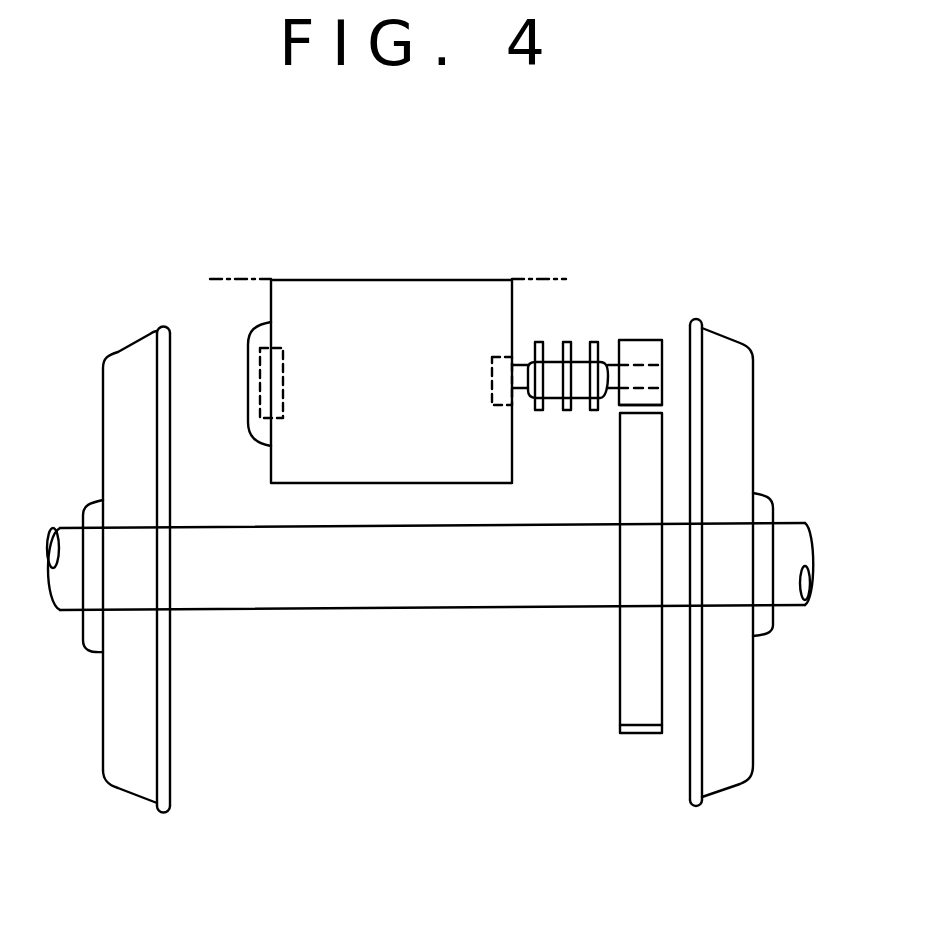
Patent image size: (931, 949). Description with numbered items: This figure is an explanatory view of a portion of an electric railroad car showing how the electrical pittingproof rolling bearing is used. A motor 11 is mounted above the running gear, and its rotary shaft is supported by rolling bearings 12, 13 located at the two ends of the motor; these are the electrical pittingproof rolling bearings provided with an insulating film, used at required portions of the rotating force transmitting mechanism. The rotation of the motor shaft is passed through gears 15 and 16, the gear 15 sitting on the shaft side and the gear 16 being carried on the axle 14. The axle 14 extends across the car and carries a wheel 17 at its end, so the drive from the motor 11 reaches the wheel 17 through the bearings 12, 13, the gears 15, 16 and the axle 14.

The motor 11 is at (413, 307).
The rolling bearing 12 is at (246, 335).
The rolling bearing 13 is at (513, 358).
The axle 14 is at (458, 583).
The gear 15 is at (638, 352).
The gear 16 is at (643, 470).
The wheel 17 is at (737, 712).